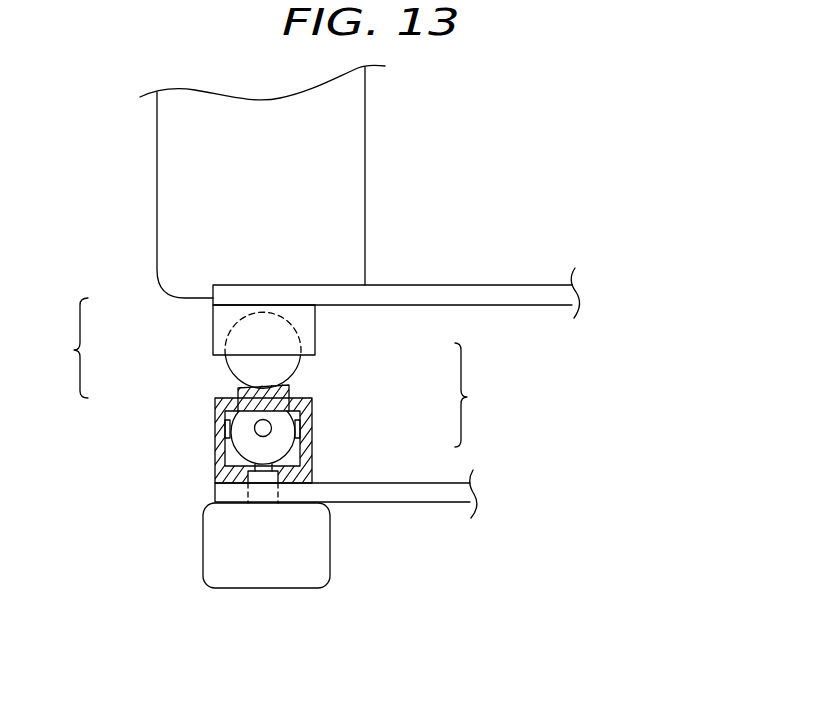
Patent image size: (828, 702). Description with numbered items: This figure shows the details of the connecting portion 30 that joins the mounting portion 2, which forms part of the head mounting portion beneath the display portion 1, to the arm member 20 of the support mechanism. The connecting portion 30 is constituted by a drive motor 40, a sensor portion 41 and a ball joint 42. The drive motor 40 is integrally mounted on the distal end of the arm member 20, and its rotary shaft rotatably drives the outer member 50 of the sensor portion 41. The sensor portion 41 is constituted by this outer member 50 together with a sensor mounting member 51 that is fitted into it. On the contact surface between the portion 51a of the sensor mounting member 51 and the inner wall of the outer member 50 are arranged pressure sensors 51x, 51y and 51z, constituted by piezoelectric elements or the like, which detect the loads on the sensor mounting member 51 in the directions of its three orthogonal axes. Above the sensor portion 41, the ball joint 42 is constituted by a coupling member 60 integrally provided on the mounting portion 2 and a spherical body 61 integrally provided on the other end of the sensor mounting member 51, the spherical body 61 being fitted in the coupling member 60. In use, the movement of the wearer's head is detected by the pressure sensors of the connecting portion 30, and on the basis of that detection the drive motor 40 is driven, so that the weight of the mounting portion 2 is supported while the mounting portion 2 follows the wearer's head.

The display portion 1 is at (172, 172).
The mounting portion 2 is at (437, 297).
The arm member 20 is at (388, 495).
The connecting portion 30 is at (550, 368).
The drive motor 40 is at (272, 572).
The sensor portion 41 is at (477, 395).
The ball joint 42 is at (66, 348).
The outer member 50 is at (306, 447).
The sensor mounting member 51 is at (283, 392).
The portion of the sensor mounting member 51a is at (255, 465).
The pressure sensor 51x is at (248, 447).
The pressure sensor 51y is at (262, 478).
The pressure sensor 51z is at (258, 422).
The coupling member 60 is at (222, 325).
The spherical body 61 is at (232, 370).